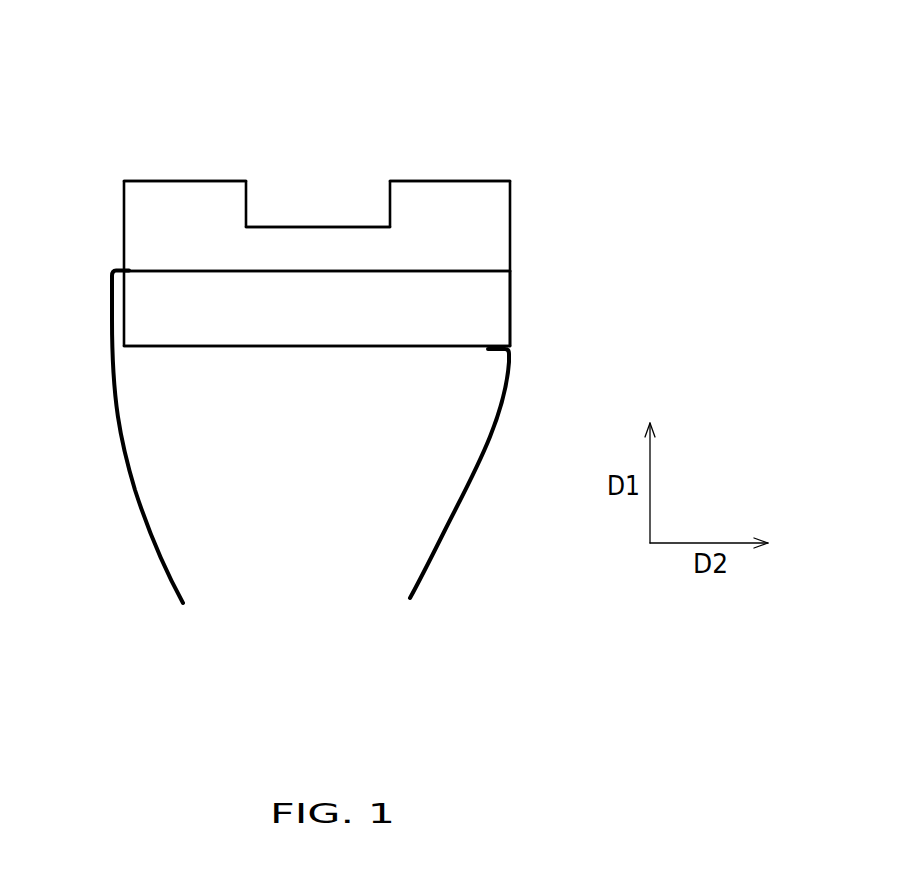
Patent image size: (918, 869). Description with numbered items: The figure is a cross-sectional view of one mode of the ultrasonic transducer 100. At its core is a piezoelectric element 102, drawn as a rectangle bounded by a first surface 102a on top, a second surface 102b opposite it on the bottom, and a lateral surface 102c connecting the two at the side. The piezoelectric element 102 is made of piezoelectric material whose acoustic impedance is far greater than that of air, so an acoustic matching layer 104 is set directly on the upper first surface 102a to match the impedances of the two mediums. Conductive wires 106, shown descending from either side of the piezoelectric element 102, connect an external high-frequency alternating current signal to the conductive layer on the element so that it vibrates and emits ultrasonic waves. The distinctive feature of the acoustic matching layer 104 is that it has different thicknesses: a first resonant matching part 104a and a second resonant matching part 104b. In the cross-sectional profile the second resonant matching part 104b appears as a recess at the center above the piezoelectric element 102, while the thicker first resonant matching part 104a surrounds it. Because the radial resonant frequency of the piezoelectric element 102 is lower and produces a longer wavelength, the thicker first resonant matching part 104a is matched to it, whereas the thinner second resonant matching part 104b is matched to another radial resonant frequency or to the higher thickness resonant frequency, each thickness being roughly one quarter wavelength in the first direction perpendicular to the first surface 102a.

The ultrasonic transducer 100 is at (455, 78).
The piezoelectric element 102 is at (339, 324).
The first surface 102a is at (490, 271).
The second surface 102b is at (488, 346).
The lateral surface 102c is at (510, 303).
The acoustic matching layer 104 is at (339, 260).
The first resonant matching part 104a is at (187, 197).
The second resonant matching part 104b is at (293, 228).
The conductive wires 106 is at (125, 458).